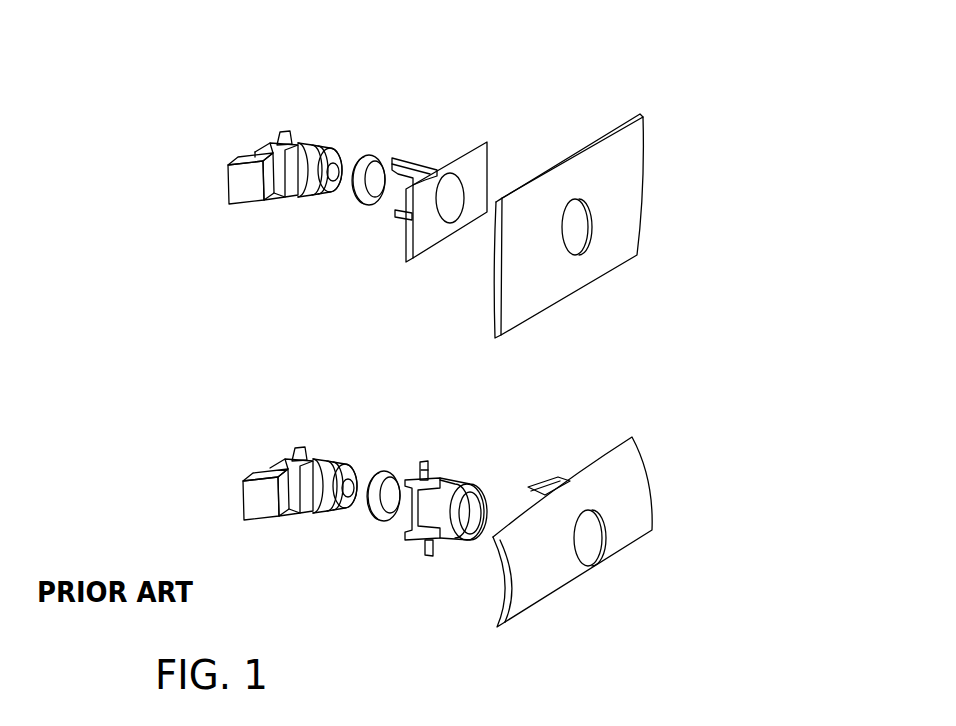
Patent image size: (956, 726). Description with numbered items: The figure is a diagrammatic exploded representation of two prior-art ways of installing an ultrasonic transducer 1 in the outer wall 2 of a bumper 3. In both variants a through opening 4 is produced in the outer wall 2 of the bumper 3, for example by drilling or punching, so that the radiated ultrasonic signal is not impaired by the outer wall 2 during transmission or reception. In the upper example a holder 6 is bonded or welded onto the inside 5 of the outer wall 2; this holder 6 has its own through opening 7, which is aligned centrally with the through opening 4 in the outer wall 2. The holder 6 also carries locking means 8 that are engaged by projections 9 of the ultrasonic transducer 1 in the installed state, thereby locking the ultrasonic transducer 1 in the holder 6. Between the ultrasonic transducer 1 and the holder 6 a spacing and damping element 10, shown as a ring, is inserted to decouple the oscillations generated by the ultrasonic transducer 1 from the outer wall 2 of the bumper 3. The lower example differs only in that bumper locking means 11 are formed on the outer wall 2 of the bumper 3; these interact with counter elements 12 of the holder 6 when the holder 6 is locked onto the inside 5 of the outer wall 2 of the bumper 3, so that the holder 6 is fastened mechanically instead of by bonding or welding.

The ultrasonic transducer 1 is at (266, 151).
The outer wall 2 is at (638, 179).
The bumper 3 is at (675, 76).
The through opening 4 is at (581, 229).
The inside 5 is at (573, 132).
The holder 6 is at (415, 243).
The through opening 7 is at (450, 208).
The locking means 8 is at (402, 157).
The projections 9 is at (282, 131).
The spacing and damping element 10 is at (356, 196).
The bumper locking means 11 is at (549, 481).
The counter elements 12 is at (427, 461).